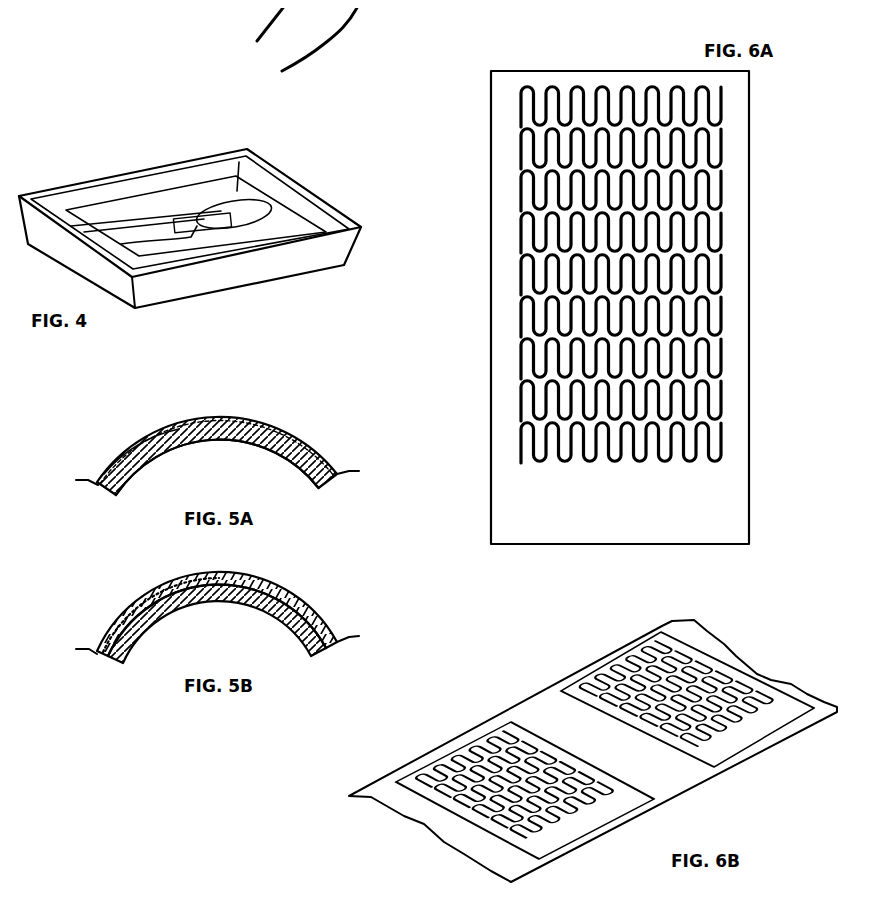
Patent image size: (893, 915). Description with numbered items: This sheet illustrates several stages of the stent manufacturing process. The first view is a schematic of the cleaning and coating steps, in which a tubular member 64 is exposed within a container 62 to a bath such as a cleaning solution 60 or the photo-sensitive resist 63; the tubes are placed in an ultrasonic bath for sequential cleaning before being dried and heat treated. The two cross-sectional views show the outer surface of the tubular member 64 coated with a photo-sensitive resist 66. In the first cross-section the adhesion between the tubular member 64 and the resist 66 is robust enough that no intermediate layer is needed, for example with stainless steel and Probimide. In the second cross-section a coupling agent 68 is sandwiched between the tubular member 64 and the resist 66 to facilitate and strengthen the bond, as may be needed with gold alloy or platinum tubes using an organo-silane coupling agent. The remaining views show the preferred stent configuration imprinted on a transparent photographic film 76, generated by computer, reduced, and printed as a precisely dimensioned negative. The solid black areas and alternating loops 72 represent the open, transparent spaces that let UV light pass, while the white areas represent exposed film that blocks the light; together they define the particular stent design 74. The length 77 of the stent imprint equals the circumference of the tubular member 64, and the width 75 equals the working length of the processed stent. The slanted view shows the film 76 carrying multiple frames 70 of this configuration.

In FIG. 4, the cleaning solution 60 is at (153, 190).
In FIG. 4, the container 62 is at (173, 152).
In FIG. 4, the photo-sensitive resist 63 is at (247, 173).
In FIG. 4, the tubular member 64 is at (263, 215).
In FIG. 5A, the tubular member 64 is at (205, 440).
In FIG. 5B, the tubular member 64 is at (203, 602).
In FIG. 5A, the photo-sensitive resist 66 is at (246, 418).
In FIG. 5B, the photo-sensitive resist 66 is at (275, 578).
In FIG. 5B, the coupling agent 68 is at (135, 612).
In FIG. 6B, the frames 70 is at (590, 833).
In FIG. 6A, the alternating loops 72 is at (627, 84).
In FIG. 6A, the stent design 74 is at (724, 332).
In FIG. 6A, the width 75 is at (441, 69).
In FIG. 6B, the width 75 is at (330, 808).
In FIG. 6B, the transparent photographic film 76 is at (663, 782).
In FIG. 6A, the length 77 is at (489, 576).
In FIG. 6B, the length 77 is at (659, 620).